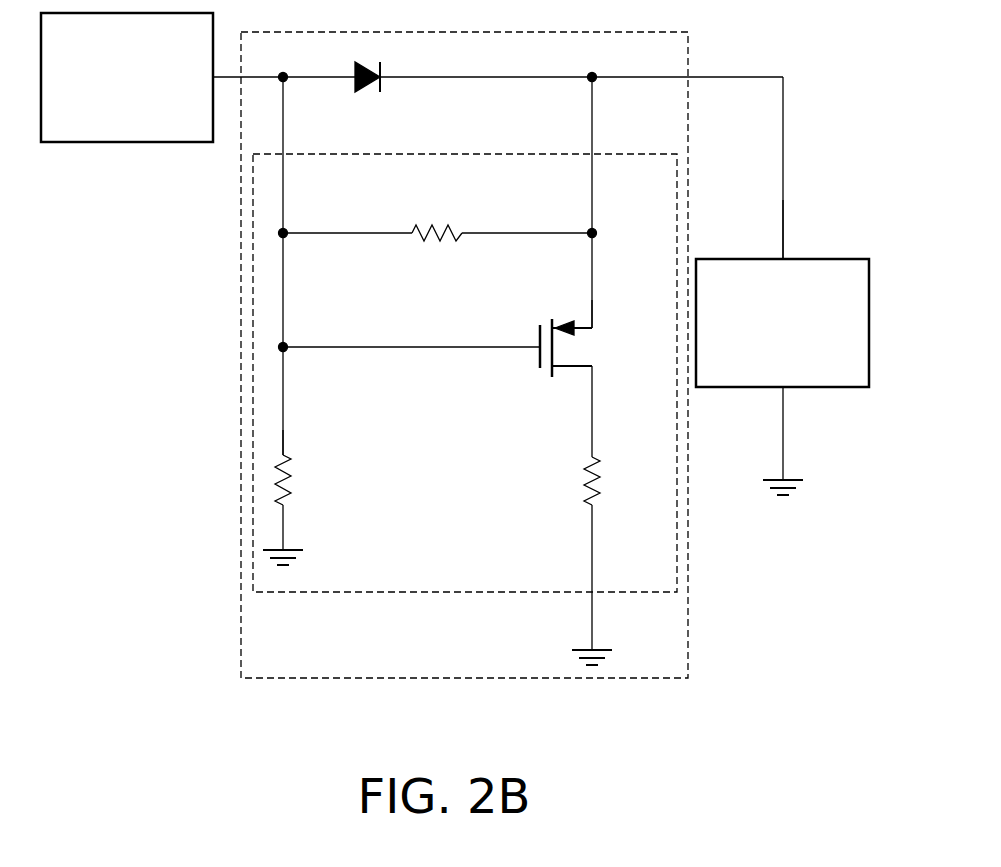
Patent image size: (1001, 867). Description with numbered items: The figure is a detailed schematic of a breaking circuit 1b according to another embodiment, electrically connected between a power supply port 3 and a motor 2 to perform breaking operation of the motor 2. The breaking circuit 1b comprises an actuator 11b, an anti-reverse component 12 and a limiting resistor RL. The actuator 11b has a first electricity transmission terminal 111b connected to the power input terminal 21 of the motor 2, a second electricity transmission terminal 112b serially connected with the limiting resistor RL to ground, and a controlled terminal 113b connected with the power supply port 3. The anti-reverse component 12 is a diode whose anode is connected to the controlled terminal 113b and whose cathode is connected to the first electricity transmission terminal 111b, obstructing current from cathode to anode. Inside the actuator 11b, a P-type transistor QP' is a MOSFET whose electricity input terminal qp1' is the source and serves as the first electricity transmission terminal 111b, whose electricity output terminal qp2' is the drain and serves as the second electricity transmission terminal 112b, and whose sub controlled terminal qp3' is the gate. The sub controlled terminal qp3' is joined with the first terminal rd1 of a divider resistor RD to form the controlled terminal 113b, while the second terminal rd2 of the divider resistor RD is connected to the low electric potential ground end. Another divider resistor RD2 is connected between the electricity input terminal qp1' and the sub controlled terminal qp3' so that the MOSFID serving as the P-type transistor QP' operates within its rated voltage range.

The breaking circuit 1b is at (688, 60).
The actuator 11b is at (636, 154).
The anti-reverse component 12 is at (372, 62).
The power supply port 3 is at (120, 120).
The motor 2 is at (776, 354).
The power input terminal 21 is at (783, 259).
The first electricity transmission terminal 111b is at (592, 154).
The second electricity transmission terminal 112b is at (592, 592).
The controlled terminal 113b is at (283, 154).
The divider resistor RD2 is at (438, 222).
The divider resistor RD is at (301, 480).
The limiting resistor RL is at (609, 450).
The P-type transistor QP' is at (586, 348).
The electricity input terminal qp1' is at (626, 310).
The electricity output terminal qp2' is at (626, 380).
The sub controlled terminal qp3' is at (410, 378).
The first terminal rd1 is at (283, 445).
The second terminal rd2 is at (283, 520).